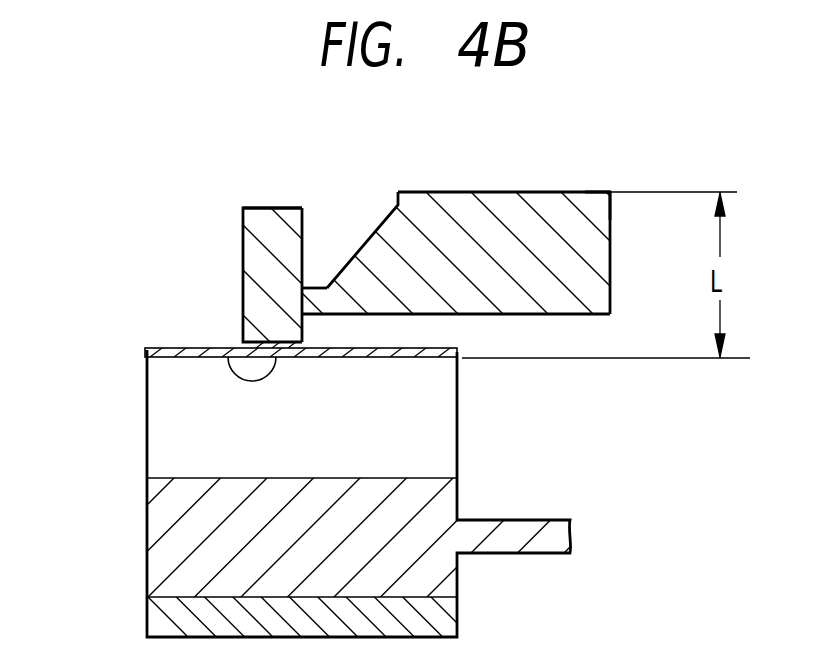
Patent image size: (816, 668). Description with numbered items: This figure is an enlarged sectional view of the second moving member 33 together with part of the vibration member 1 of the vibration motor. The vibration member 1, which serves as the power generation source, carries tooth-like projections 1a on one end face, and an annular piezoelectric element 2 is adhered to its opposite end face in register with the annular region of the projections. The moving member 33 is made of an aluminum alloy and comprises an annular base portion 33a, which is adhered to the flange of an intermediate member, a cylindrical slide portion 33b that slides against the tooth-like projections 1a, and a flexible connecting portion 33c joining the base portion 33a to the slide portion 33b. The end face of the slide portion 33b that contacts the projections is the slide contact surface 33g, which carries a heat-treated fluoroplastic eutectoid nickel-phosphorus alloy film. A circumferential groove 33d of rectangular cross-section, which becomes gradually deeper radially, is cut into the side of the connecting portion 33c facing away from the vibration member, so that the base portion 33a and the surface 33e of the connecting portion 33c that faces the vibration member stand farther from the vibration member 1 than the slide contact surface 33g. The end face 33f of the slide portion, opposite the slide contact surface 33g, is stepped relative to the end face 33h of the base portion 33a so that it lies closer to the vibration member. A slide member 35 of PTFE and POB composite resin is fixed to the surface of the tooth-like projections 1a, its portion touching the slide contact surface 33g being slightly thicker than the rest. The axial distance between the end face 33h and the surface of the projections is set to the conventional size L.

The vibration member 1 is at (338, 497).
The tooth-like projections 1a is at (157, 420).
The piezoelectric element 2 is at (157, 613).
The second moving member 33 is at (387, 267).
The base portion 33a is at (510, 207).
The slide portion 33b is at (272, 236).
The connecting portion 33c is at (385, 265).
The circumferential groove 33d is at (320, 262).
The surface of the connecting portion 33e is at (543, 315).
The end face 33f is at (265, 207).
The slide contact surface 33g is at (230, 370).
The end face of the base portion 33h is at (570, 192).
The slide member 35 is at (155, 347).